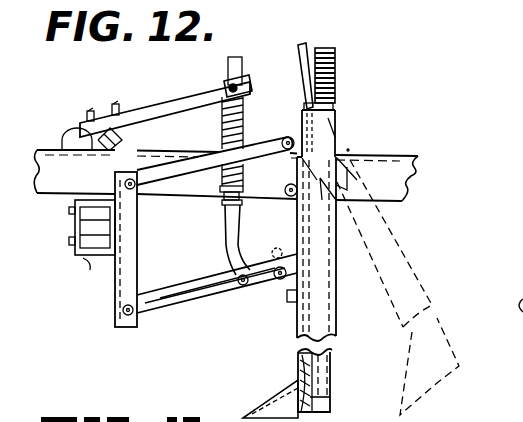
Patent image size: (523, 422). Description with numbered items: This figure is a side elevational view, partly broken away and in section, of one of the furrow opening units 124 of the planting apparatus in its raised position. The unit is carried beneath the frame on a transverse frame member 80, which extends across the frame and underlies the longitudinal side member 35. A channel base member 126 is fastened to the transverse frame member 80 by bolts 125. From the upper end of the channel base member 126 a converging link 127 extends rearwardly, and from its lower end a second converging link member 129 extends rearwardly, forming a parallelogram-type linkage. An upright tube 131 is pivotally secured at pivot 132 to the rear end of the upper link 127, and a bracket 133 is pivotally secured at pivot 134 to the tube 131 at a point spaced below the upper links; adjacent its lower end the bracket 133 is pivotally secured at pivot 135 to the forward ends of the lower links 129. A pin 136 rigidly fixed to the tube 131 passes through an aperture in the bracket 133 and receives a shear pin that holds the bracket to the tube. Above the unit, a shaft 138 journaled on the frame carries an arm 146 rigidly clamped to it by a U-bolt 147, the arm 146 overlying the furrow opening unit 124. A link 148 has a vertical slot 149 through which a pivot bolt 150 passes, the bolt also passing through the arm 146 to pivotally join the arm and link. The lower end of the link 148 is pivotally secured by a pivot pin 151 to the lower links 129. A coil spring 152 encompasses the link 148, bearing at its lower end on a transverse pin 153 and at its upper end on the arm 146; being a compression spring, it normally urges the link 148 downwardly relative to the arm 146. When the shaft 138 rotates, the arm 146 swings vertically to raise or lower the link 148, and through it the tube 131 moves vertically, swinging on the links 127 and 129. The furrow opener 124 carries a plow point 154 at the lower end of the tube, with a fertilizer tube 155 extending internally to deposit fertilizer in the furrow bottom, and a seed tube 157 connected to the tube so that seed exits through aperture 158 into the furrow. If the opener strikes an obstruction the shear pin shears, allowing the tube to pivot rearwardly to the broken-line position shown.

The side member 35 is at (50, 185).
The transverse frame member 80 is at (83, 258).
The furrow opening unit 124 is at (333, 333).
The bolts 125 is at (72, 222).
The channel base member 126 is at (115, 298).
The converging link 127 is at (170, 170).
The converging link member 129 is at (197, 303).
The upright tube 131 is at (357, 137).
The pivot 132 is at (302, 125).
The bracket 133 is at (305, 247).
The pivot 134 is at (290, 197).
The pivot 135 is at (277, 280).
The pin 136 is at (291, 303).
The shaft 138 is at (105, 116).
The arm 146 is at (143, 110).
The U-bolt 147 is at (61, 143).
The link 148 is at (240, 62).
The slot 149 is at (243, 112).
The pivot bolt 150 is at (216, 78).
The pivot pin 151 is at (242, 290).
The coil spring 152 is at (222, 200).
The transverse pin 153 is at (226, 232).
The plow point 154 is at (270, 398).
The fertilizer tube 155 is at (306, 44).
The seed tube 157 is at (338, 74).
The aperture 158 is at (331, 403).